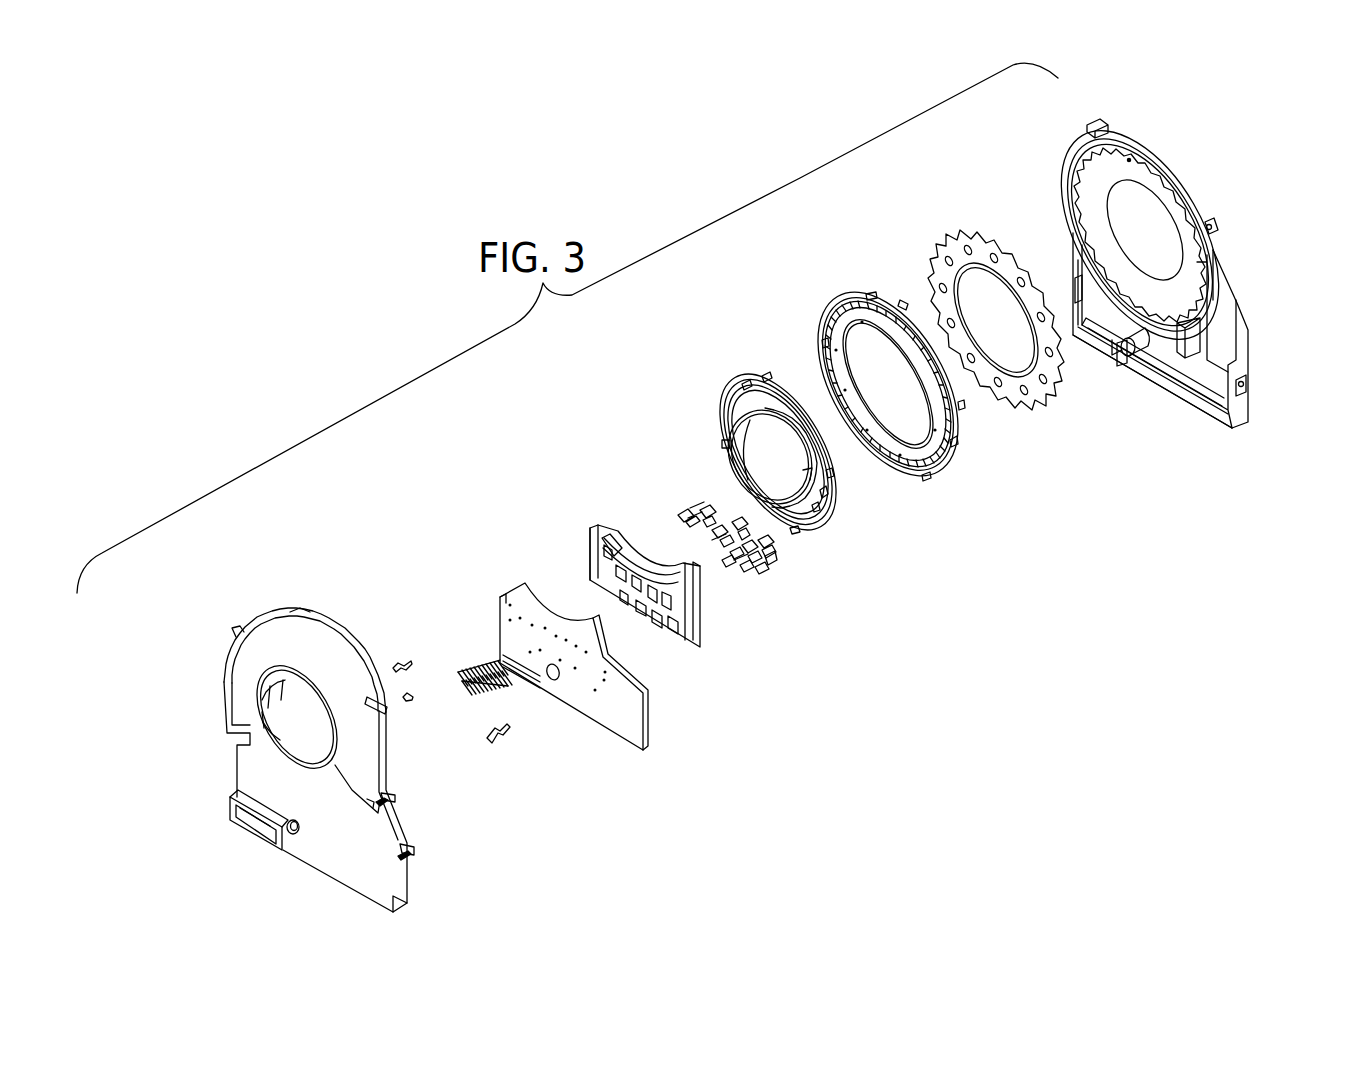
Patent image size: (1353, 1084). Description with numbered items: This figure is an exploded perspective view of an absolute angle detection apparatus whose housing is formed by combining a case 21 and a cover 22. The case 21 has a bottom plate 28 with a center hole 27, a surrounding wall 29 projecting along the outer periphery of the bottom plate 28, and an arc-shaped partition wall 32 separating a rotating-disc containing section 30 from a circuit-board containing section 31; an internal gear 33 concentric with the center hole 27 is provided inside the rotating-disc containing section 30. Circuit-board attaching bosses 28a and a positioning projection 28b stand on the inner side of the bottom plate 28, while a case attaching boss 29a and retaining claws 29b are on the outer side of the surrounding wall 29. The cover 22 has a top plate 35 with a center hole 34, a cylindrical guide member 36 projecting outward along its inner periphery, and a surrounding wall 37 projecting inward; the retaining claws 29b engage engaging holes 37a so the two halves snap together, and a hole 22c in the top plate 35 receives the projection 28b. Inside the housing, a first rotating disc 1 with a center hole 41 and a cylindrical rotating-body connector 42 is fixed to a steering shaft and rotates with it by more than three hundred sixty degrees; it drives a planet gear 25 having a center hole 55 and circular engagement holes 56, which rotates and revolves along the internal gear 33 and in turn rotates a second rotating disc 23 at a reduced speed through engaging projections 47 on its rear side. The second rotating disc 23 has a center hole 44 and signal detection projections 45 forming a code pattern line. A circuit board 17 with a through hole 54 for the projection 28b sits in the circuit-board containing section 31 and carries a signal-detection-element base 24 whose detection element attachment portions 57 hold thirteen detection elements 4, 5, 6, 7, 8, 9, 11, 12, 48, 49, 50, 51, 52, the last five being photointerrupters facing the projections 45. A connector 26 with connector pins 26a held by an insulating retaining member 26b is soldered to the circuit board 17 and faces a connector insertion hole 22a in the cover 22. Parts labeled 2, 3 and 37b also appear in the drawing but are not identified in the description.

The first rotating disc 1 is at (832, 508).
The first ring 2 is at (833, 478).
The second ring 3 is at (813, 520).
The detection element 4 is at (756, 583).
The detection element 5 is at (708, 516).
The detection element 6 is at (723, 536).
The detection element 7 is at (741, 528).
The detection element 8 is at (752, 551).
The detection element 9 is at (767, 546).
The detection element 11 is at (737, 553).
The detection element 12 is at (747, 566).
The circuit board 17 is at (647, 723).
The case 21 is at (1207, 173).
The cover 22 is at (340, 870).
The connector insertion hole 22a is at (257, 838).
The hole 22c is at (290, 840).
The second rotating disc 23 is at (947, 460).
The signal-detection-element base 24 is at (705, 632).
The planet gear 25 is at (996, 238).
The connector 26 is at (463, 672).
The connector pins 26a is at (478, 690).
The retaining member 26b is at (503, 695).
The center hole 27 is at (1143, 190).
The bottom plate 28 is at (1190, 270).
The circuit-board attaching bosses 28a is at (1077, 282).
The positioning projection 28b is at (1125, 358).
The surrounding wall 29 is at (1207, 420).
The case attaching boss 29a is at (1107, 125).
The retaining claws 29b is at (1213, 222).
The rotating-disc containing section 30 is at (1095, 208).
The circuit-board containing section 31 is at (1173, 367).
The arc-shaped partition wall 32 is at (1120, 325).
The internal gear 33 is at (1078, 190).
The center hole 34 is at (303, 640).
The top plate 35 is at (300, 612).
The cylindrical guide member 36 is at (300, 697).
The surrounding wall 37 is at (383, 758).
The engaging holes 37a is at (378, 798).
The tab 37b is at (397, 790).
The center hole 41 is at (767, 443).
The rotating-body connector 42 is at (797, 490).
The center hole 44 is at (875, 343).
The projections 45 is at (817, 323).
The engaging projections 47 is at (847, 322).
The detection element 48 is at (762, 568).
The detection element 49 is at (696, 510).
The detection element 50 is at (730, 547).
The detection element 51 is at (771, 558).
The detection element 52 is at (729, 561).
The through hole 54 is at (553, 678).
The center hole 55 is at (982, 293).
The circular engagement holes 56 is at (940, 247).
The detection element attachment portions 57 is at (630, 547).